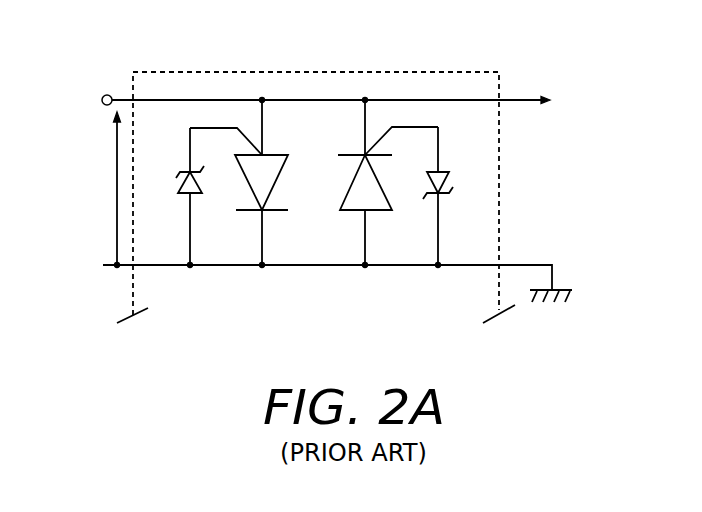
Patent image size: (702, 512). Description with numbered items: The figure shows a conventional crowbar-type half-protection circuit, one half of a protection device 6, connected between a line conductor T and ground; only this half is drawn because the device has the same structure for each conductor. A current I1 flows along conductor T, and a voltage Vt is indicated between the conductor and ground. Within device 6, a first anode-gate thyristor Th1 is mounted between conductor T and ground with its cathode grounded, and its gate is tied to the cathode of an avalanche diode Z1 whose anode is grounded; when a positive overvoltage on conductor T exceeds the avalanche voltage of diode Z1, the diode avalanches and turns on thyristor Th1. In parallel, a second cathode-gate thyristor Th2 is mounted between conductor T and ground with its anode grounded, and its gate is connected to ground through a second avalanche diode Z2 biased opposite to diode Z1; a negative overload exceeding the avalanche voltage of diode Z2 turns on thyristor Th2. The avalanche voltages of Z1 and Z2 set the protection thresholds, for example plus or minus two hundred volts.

The protection device 6 is at (300, 72).
The conductor T is at (106, 95).
The current I1 is at (342, 102).
The terminal voltage Vt is at (102, 190).
The avalanche diode Z1 is at (205, 198).
The second avalanche diode Z2 is at (450, 197).
The first anode-gate thyristor Th1 is at (274, 184).
The second cathode-gate thyristor Th2 is at (376, 184).